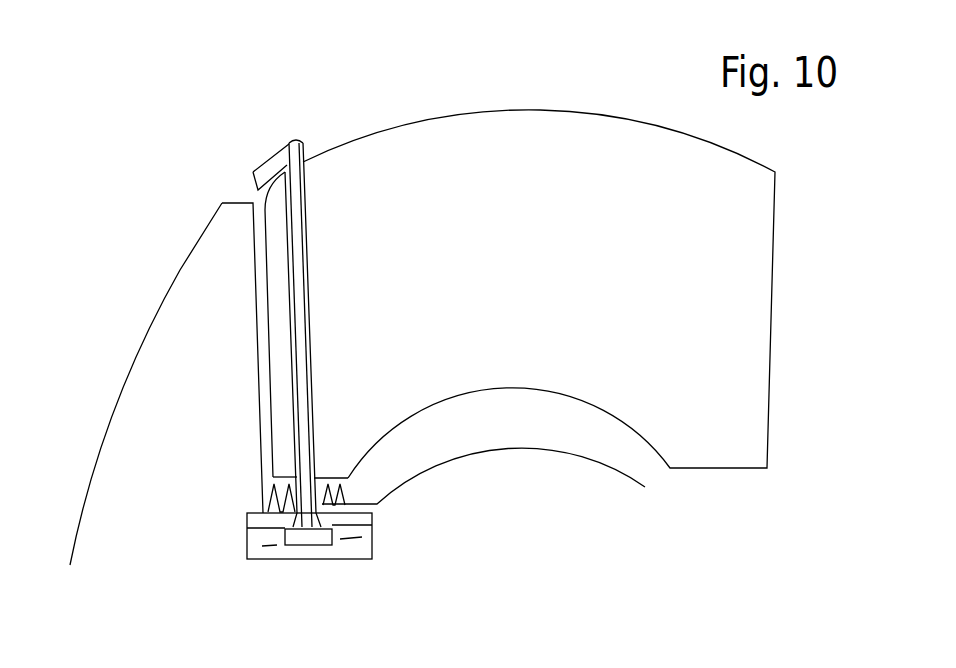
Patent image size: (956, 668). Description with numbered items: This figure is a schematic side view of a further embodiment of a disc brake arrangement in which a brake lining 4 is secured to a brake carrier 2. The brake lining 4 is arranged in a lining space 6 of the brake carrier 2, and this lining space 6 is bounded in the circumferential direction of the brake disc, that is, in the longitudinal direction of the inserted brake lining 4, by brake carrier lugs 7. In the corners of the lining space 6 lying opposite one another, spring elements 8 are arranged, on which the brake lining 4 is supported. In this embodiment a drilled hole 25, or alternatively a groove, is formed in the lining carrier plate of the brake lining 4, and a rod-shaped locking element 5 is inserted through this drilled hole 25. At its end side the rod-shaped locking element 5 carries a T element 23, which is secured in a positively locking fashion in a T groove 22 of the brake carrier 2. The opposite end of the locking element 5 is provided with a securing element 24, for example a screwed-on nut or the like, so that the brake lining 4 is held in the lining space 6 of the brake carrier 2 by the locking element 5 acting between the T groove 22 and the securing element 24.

The brake carrier 2 is at (173, 317).
The brake lining 4 is at (543, 108).
The locking element 5 is at (304, 255).
The lining space 6 is at (517, 422).
The brake carrier lug 7 is at (132, 423).
The spring element 8 is at (262, 497).
The T groove 22 is at (257, 552).
The T element 23 is at (313, 545).
The securing element 24 is at (263, 170).
The drilled hole 25 is at (310, 307).